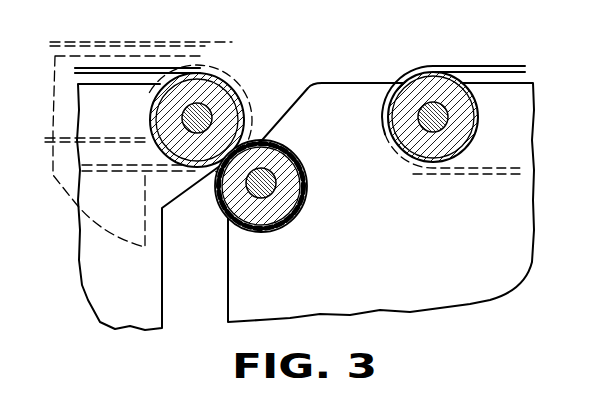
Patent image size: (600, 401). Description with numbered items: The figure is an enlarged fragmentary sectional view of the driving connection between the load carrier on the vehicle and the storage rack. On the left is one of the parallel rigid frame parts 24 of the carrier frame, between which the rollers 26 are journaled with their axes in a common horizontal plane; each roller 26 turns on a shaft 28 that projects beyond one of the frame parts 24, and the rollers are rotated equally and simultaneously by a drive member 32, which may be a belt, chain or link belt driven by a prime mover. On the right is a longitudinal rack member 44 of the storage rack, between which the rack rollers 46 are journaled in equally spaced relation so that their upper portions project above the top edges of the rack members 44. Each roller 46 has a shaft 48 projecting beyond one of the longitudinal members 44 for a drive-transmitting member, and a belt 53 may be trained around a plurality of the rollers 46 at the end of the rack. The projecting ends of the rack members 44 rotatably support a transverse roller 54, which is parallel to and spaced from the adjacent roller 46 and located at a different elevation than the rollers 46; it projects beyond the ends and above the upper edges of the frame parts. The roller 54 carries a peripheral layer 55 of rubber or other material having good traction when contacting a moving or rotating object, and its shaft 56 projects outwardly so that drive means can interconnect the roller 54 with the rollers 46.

The frame parts 24 is at (100, 300).
The rollers 26 is at (170, 112).
The shafts 28 is at (183, 120).
The drive member 32 is at (236, 82).
The longitudinal rack members 44 is at (515, 239).
The rollers 46 is at (452, 117).
The shafts 48 is at (445, 122).
The belt 53 is at (490, 66).
The transverse roller 54 is at (284, 203).
The peripheral layer 55 is at (297, 214).
The shaft 56 is at (263, 198).